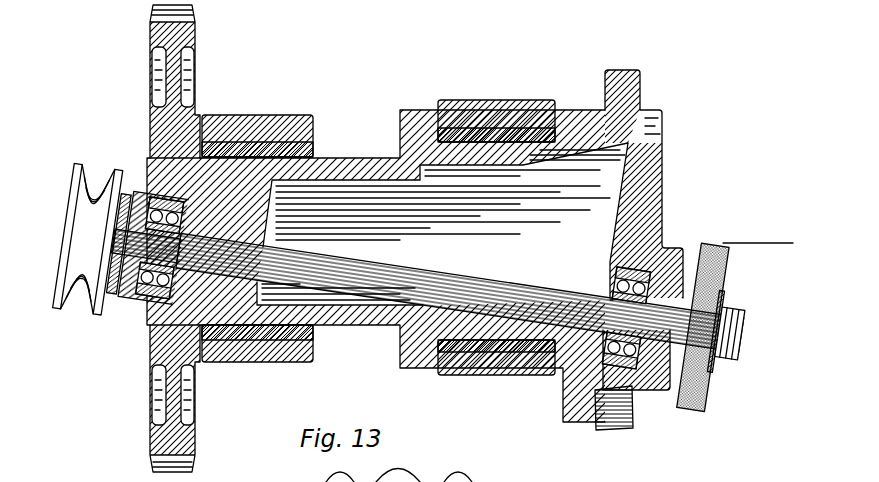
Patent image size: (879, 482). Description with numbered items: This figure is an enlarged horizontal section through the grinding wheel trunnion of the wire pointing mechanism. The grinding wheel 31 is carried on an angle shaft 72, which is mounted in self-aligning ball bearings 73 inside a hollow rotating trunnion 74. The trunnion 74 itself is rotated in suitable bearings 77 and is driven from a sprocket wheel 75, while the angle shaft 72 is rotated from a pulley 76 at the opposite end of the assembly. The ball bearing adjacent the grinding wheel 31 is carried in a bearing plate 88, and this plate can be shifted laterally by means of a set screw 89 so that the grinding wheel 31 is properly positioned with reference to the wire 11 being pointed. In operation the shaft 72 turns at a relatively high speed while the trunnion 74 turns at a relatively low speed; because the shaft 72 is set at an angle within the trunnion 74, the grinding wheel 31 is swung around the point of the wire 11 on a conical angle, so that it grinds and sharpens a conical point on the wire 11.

The wire 11 is at (753, 242).
The grinding wheel 31 is at (715, 272).
The angle shaft 72 is at (535, 288).
The self-aligning ball bearings 73 is at (150, 292).
The hollow rotating trunnion 74 is at (330, 163).
The sprocket wheel 75 is at (167, 400).
The pulley 76 is at (60, 266).
The bearings 77 is at (272, 125).
The bearing plate 88 is at (645, 172).
The set screw 89 is at (626, 392).